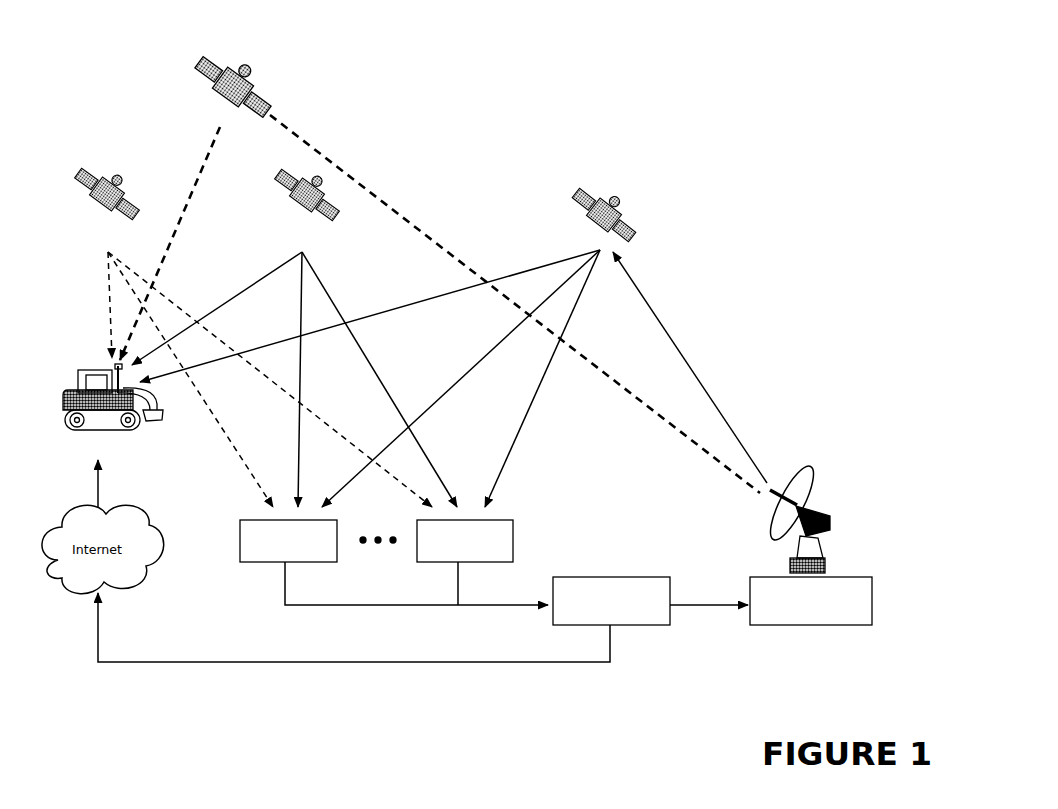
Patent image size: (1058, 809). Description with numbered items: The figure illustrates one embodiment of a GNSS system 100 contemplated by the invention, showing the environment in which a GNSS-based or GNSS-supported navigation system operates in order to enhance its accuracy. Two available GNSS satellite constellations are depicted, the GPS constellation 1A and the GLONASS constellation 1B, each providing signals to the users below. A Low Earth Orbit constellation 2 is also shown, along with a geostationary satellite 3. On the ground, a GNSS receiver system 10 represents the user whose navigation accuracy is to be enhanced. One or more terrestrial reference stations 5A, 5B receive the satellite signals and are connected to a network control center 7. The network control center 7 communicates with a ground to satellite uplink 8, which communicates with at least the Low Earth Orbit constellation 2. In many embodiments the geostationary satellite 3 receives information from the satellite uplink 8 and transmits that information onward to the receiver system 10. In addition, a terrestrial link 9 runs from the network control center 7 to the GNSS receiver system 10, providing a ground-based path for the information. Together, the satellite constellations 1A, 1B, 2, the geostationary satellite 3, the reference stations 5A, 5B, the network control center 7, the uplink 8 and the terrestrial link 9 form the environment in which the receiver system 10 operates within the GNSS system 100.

The GPS constellation 1A is at (313, 123).
The GLONASS constellation 1B is at (73, 120).
The Low Earth Orbit constellation 2 is at (633, 205).
The geostationary satellite 3 is at (263, 80).
The terrestrial reference station 5A is at (305, 562).
The terrestrial reference station 5B is at (478, 562).
The network control center 7 is at (602, 577).
The ground to satellite uplink 8 is at (847, 575).
The terrestrial link 9 is at (213, 660).
The GNSS receiver system 10 is at (78, 367).
The GNSS system 100 is at (752, 335).